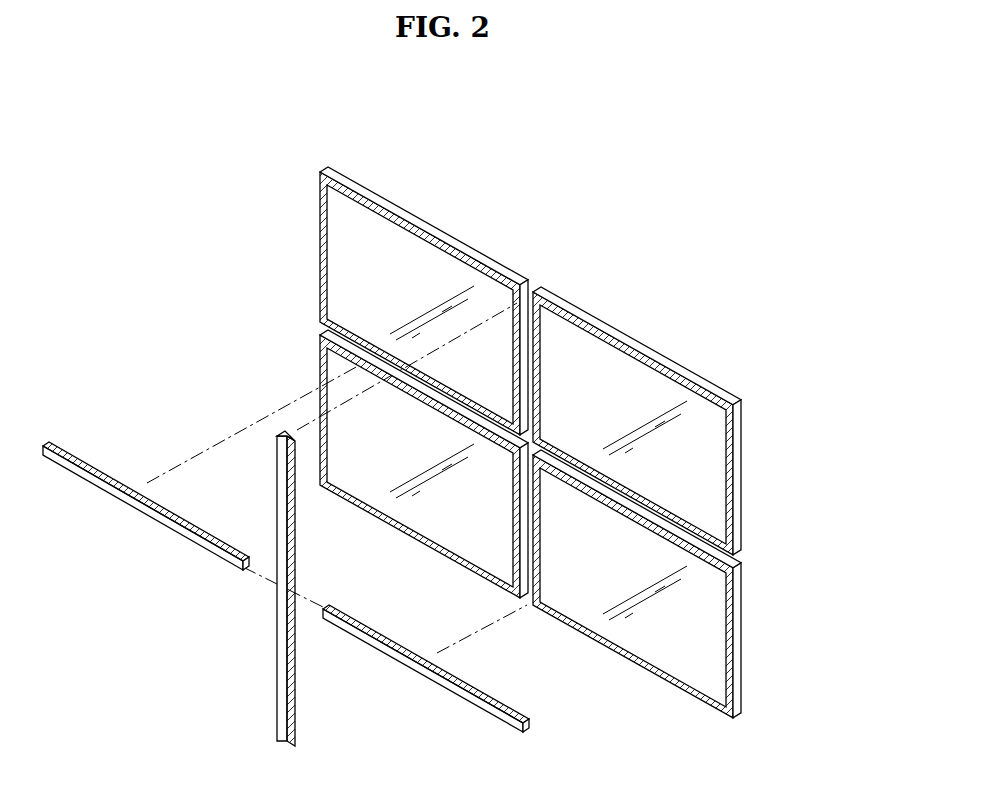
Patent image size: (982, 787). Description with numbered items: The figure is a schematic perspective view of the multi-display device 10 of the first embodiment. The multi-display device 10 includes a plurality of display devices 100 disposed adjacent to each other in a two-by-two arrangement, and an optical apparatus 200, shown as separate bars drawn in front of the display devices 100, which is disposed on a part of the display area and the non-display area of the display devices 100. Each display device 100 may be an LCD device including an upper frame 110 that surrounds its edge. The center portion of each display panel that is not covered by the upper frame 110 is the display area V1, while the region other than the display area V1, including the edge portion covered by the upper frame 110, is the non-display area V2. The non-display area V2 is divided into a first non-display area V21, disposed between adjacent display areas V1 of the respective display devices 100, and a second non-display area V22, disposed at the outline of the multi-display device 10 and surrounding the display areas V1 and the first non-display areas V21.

The multi-display device 10 is at (110, 150).
The display device 100 is at (522, 431).
The upper frame 110 is at (408, 219).
The display area V1 is at (340, 230).
The non-display area V2 is at (529, 429).
The first non-display area V21 is at (524, 328).
The second non-display area V22 is at (456, 250).
The optical apparatus 200 is at (127, 498).